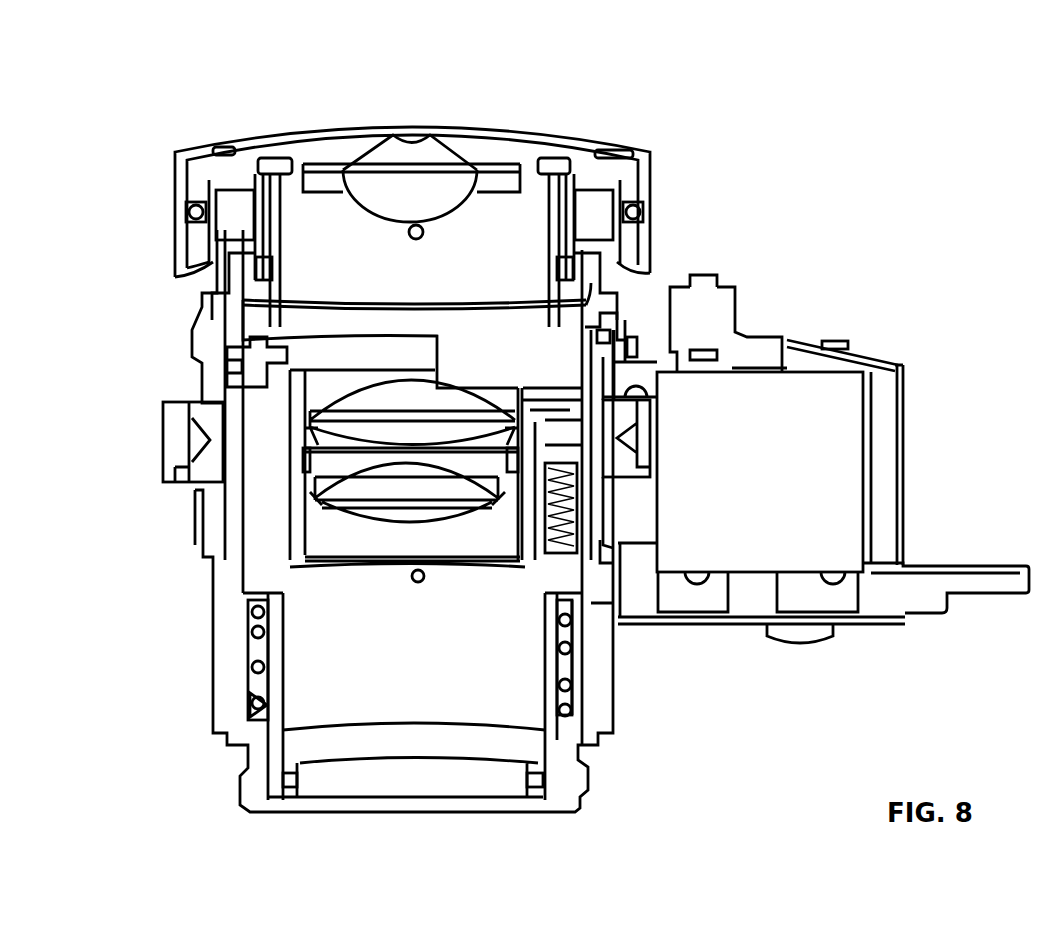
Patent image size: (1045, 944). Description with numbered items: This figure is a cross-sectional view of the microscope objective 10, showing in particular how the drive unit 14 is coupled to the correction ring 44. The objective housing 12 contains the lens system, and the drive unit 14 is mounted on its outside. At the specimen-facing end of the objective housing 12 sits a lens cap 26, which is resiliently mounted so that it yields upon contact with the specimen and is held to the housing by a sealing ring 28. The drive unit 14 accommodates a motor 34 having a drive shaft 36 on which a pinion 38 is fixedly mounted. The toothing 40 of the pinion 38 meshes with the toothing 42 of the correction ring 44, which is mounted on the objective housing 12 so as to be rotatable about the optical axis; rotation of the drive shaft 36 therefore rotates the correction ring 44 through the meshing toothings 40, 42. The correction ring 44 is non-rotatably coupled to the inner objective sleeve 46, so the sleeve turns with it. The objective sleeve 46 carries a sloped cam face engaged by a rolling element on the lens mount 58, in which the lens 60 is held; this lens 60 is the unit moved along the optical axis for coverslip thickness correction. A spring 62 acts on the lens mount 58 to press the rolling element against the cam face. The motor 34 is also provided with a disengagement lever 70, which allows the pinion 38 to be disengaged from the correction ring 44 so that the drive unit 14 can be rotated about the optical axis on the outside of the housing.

The microscope objective 10 is at (95, 710).
The objective housing 12 is at (608, 722).
The drive unit 14 is at (918, 110).
The lens cap 26 is at (190, 180).
The sealing ring 28 is at (636, 214).
The motor 34 is at (718, 548).
The drive shaft 36 is at (708, 275).
The pinion 38 is at (730, 312).
The toothing 40 is at (598, 345).
The toothing 42 is at (630, 338).
The correction ring 44 is at (620, 312).
The inner objective sleeve 46 is at (297, 322).
The lens mount 58 is at (305, 483).
The lens 60 is at (378, 490).
The spring 62 is at (565, 535).
The disengagement lever 70 is at (967, 583).